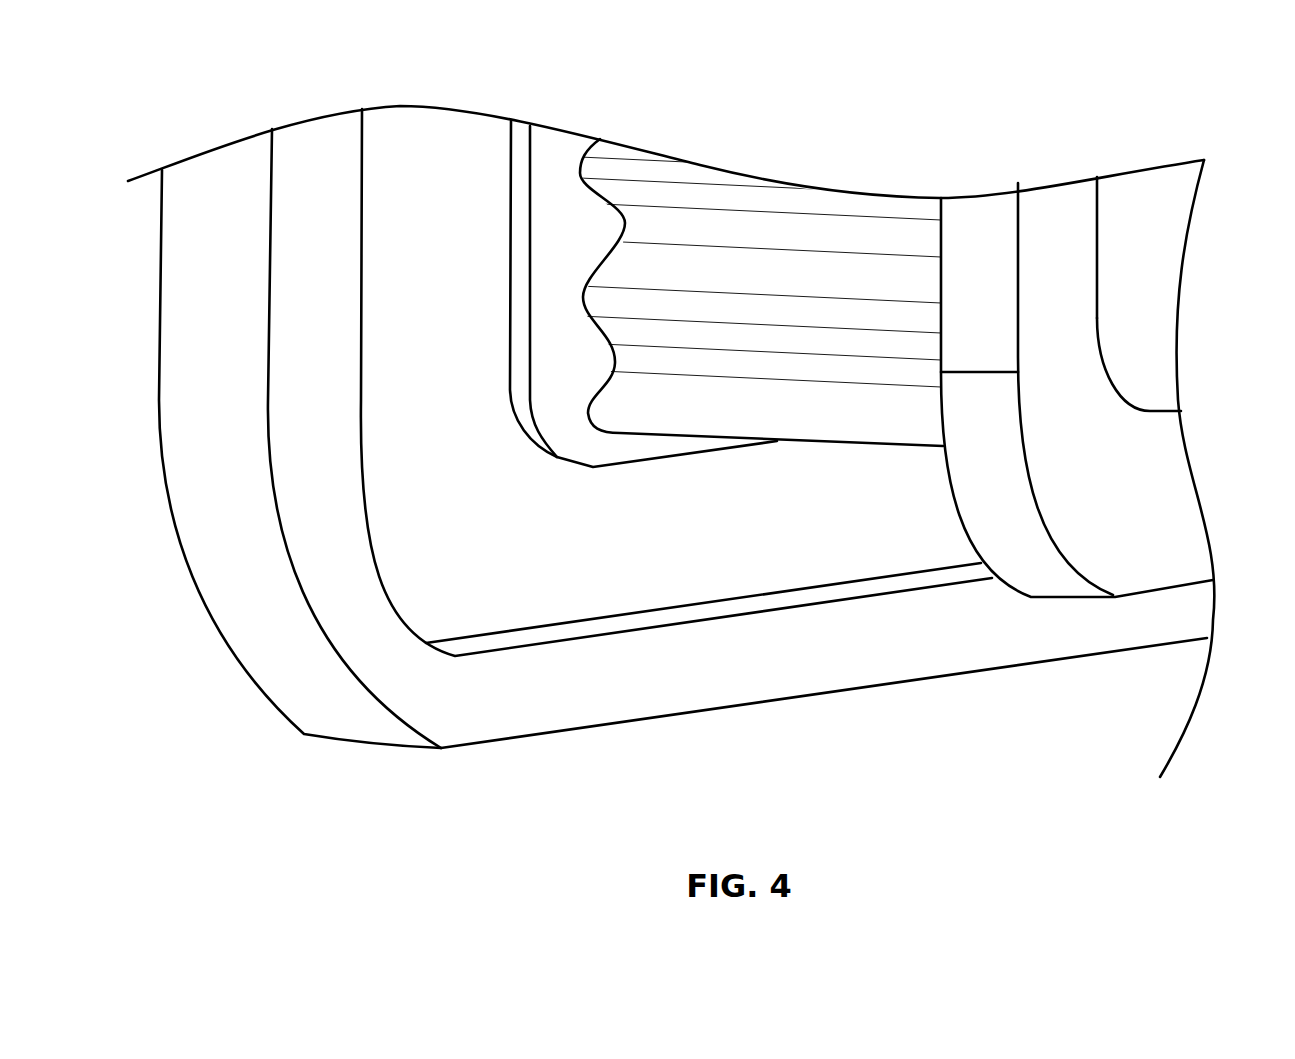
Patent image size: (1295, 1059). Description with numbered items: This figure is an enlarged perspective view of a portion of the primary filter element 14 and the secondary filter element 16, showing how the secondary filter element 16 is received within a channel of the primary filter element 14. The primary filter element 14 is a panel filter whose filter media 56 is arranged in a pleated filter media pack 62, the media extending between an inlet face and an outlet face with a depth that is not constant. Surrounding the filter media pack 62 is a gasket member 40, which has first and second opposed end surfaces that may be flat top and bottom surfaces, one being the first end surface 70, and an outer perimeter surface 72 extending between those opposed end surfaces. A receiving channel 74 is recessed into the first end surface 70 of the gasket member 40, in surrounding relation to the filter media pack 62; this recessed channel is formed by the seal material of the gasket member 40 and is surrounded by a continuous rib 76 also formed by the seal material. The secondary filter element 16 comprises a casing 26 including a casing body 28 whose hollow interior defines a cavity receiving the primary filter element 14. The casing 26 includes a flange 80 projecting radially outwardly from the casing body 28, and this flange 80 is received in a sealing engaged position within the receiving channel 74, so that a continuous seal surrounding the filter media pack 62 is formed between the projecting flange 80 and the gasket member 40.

The primary filter element 14 is at (553, 124).
The secondary filter element 16 is at (1058, 187).
The casing 26 is at (1168, 362).
The casing body 28 is at (1166, 284).
The gasket member 40 is at (619, 708).
The filter media 56 is at (796, 421).
The pleated filter media pack 62 is at (777, 244).
The first end surface 70 is at (434, 705).
The outer perimeter surface 72 is at (296, 701).
The receiving channel 74 is at (767, 535).
The continuous rib 76 is at (695, 668).
The flange 80 is at (1147, 514).